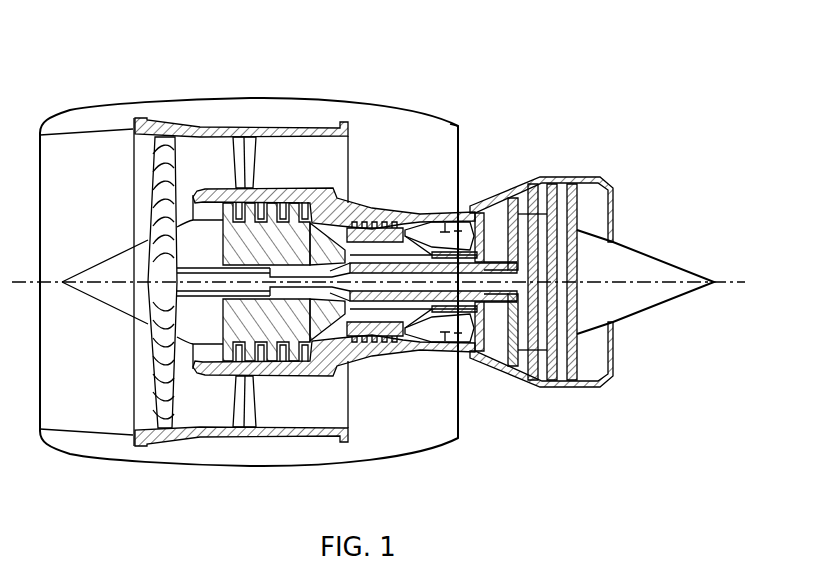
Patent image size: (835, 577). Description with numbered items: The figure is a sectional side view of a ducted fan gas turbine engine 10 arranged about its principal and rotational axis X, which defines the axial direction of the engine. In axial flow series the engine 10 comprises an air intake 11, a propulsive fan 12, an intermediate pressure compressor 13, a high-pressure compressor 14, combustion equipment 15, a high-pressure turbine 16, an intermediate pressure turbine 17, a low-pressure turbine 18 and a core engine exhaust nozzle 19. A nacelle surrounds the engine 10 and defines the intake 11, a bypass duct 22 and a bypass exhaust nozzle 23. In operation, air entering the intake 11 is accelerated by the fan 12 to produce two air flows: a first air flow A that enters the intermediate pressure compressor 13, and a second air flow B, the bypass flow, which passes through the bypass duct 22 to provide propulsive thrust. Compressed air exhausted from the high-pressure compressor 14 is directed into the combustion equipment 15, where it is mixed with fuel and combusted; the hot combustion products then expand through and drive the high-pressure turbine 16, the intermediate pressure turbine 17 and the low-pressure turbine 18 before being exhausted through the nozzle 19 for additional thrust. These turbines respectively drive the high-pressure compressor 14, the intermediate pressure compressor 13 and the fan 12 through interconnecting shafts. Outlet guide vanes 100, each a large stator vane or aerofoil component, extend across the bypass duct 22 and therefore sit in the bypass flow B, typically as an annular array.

The ducted fan gas turbine engine 10 is at (76, 68).
The air intake 11 is at (85, 128).
The propulsive fan 12 is at (158, 397).
The intermediate pressure compressor 13 is at (262, 342).
The high-pressure compressor 14 is at (382, 217).
The combustion equipment 15 is at (426, 344).
The high-pressure turbine 16 is at (475, 358).
The intermediate pressure turbine 17 is at (508, 196).
The low-pressure turbine 18 is at (523, 377).
The core engine exhaust nozzle 19 is at (604, 177).
The bypass duct 22 is at (418, 166).
The bypass exhaust nozzle 23 is at (459, 124).
The outlet guide vane 100 is at (243, 150).
The first air flow A is at (190, 209).
The second air flow B is at (202, 160).
The principal and rotational axis X is at (377, 269).